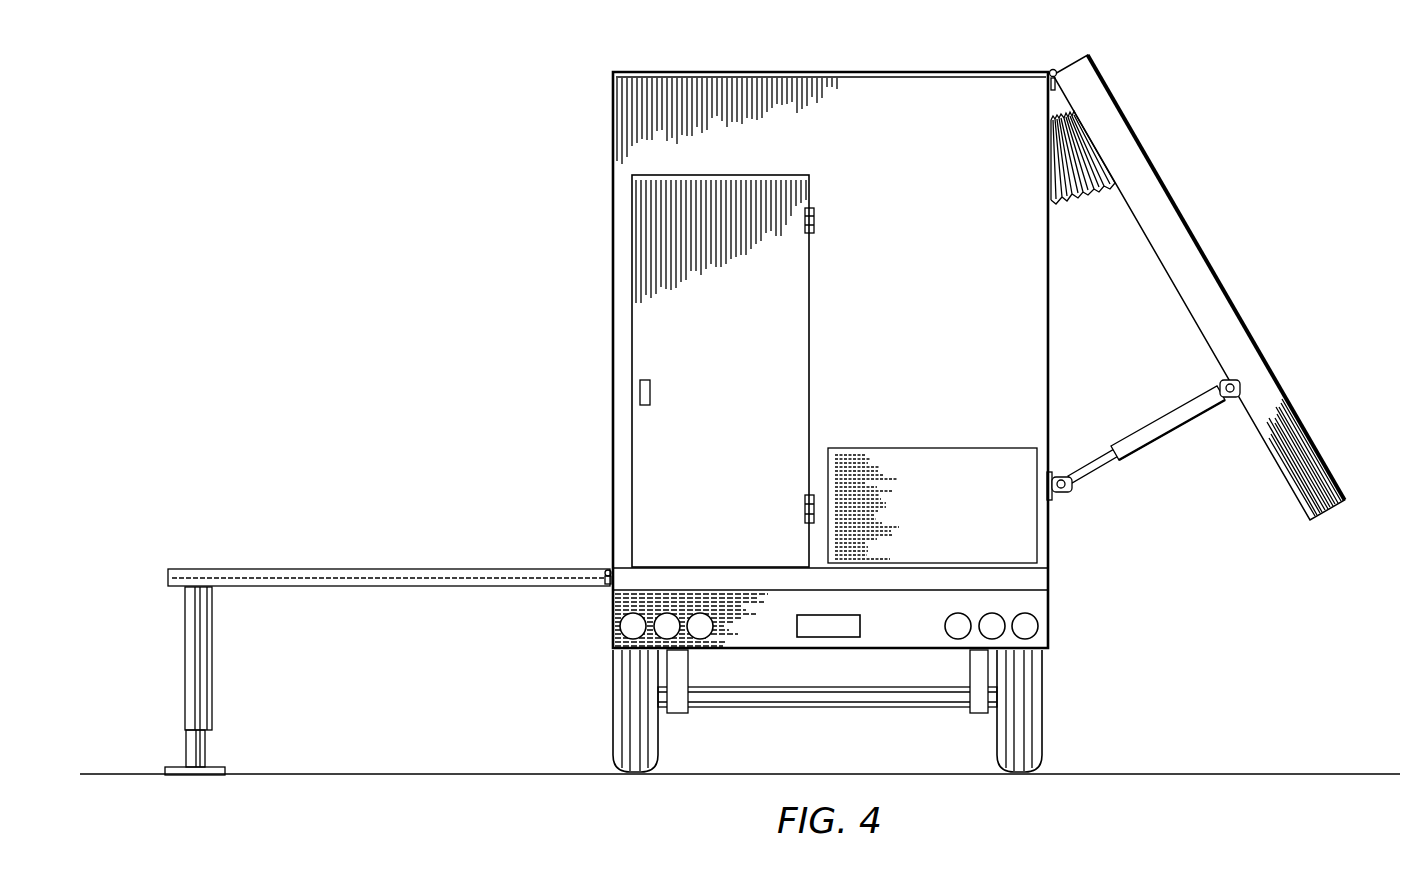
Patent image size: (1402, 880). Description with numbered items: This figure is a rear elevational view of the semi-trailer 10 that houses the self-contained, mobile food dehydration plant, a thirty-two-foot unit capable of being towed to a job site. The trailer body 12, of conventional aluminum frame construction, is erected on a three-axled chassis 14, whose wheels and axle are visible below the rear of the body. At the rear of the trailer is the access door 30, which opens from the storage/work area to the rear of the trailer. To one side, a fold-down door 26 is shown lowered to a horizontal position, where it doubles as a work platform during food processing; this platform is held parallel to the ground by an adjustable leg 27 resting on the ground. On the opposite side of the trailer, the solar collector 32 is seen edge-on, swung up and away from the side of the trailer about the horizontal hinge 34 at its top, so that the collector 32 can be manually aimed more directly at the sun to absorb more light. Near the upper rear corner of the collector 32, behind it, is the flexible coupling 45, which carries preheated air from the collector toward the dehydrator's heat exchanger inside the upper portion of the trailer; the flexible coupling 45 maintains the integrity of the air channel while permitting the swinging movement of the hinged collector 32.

The semi-trailer 10 is at (596, 163).
The trailer body 12 is at (739, 72).
The chassis 14 is at (763, 635).
The fold-down door 26 is at (373, 568).
The adjustable leg 27 is at (190, 675).
The access door 30 is at (645, 293).
The solar collector 32 is at (1206, 228).
The horizontal hinge 34 is at (1052, 70).
The flexible coupling 45 is at (1083, 197).